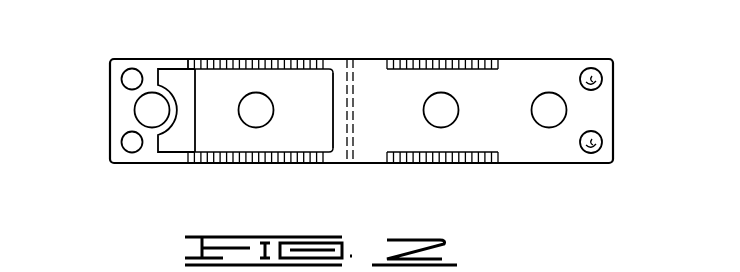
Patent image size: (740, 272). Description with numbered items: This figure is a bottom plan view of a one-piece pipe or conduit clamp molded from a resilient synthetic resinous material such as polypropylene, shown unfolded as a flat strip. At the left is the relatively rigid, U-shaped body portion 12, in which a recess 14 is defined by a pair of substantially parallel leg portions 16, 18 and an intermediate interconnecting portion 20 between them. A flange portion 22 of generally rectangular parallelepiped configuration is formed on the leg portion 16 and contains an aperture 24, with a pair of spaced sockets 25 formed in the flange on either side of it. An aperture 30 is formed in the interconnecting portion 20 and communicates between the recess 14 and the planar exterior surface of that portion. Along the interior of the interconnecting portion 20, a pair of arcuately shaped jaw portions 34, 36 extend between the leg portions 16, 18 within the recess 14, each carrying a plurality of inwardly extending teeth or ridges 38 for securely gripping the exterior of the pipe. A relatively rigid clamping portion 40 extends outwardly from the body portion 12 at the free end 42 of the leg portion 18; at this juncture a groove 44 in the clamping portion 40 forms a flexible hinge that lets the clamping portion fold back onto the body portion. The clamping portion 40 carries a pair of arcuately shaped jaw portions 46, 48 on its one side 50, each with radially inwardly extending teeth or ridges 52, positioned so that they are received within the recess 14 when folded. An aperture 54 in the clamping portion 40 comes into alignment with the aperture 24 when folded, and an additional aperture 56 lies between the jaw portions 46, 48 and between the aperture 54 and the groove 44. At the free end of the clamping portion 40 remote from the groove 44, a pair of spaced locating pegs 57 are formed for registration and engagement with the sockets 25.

The body portion 12 is at (327, 60).
The recess 14 is at (265, 137).
The leg portion 16 is at (198, 135).
The leg portion 18 is at (333, 125).
The interconnecting portion 20 is at (287, 82).
The flange portion 22 is at (115, 79).
The aperture 24 is at (141, 110).
The sockets 25 is at (130, 78).
The aperture 30 is at (257, 101).
The jaw portion 34 is at (220, 62).
The jaw portion 36 is at (230, 163).
The teeth or ridges 38 is at (255, 60).
The clamping portion 40 is at (522, 67).
The free end 42 is at (342, 143).
The groove 44 is at (355, 84).
The jaw portion 46 is at (418, 65).
The jaw portion 48 is at (430, 161).
The side 50 is at (483, 83).
The teeth or ridges 52 is at (457, 63).
The aperture 54 is at (551, 102).
The aperture 56 is at (451, 108).
The locating pegs 57 is at (595, 75).